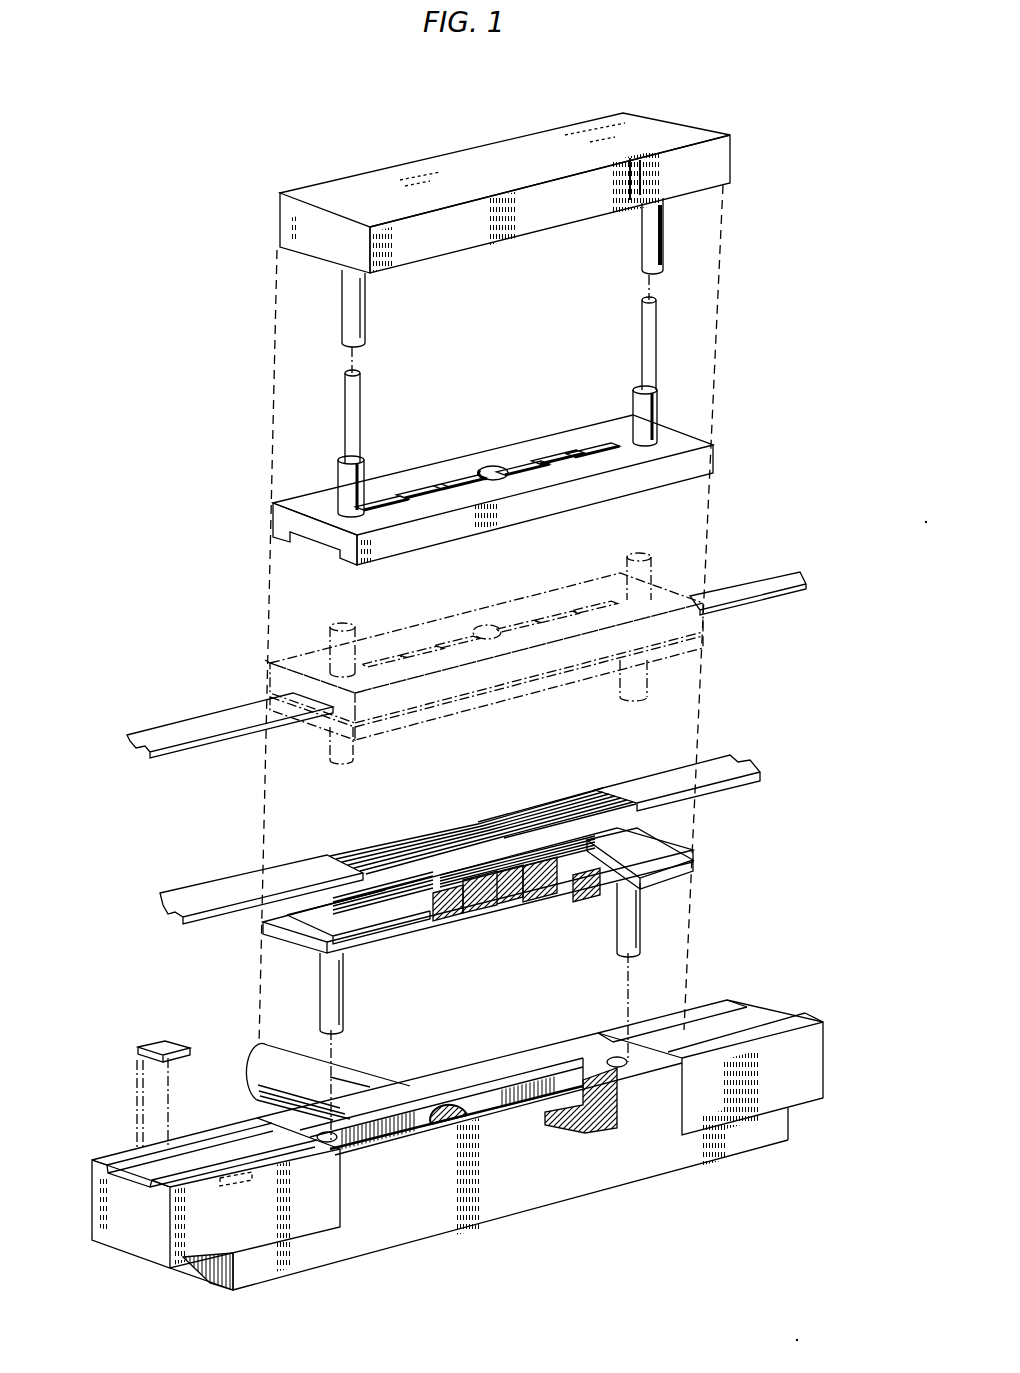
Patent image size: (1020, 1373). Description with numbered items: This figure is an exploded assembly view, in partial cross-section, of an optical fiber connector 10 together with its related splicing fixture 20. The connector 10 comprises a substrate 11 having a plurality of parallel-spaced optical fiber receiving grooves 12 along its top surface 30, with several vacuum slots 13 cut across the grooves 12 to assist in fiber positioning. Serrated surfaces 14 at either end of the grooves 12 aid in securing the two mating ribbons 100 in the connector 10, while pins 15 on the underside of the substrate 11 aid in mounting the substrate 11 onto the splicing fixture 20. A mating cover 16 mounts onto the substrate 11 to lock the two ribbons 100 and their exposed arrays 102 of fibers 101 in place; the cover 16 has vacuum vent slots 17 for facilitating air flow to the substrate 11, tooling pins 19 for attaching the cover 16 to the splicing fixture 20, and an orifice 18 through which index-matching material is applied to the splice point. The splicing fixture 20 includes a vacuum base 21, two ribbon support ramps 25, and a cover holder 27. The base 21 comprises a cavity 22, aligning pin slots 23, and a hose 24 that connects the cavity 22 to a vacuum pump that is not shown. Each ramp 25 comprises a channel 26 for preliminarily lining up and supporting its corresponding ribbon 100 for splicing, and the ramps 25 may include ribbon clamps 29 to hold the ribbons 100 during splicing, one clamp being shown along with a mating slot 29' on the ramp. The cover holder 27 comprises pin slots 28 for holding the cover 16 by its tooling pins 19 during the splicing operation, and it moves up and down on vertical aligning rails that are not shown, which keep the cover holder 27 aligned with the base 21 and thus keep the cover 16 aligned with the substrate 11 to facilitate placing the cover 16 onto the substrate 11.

The connector 10 is at (516, 745).
The substrate 11 is at (405, 722).
The optical fiber receiving grooves 12 is at (496, 908).
The vacuum slots 13 is at (525, 896).
The serrated surfaces 14 is at (650, 838).
The pins 15 is at (626, 690).
The cover 16 is at (529, 506).
The vacuum vent slots 17 is at (560, 458).
The orifice 18 is at (486, 475).
The tooling pins 19 is at (640, 338).
The splicing fixture 20 is at (437, 167).
The vacuum base 21 is at (568, 1185).
The cavity 22 is at (495, 1097).
The aligning pin slots 23 is at (608, 1060).
The hose 24 is at (250, 1063).
The ribbon support ramps 25 is at (795, 1108).
The channel 26 is at (762, 1022).
The cover holder 27 is at (538, 218).
The pin slots 28 is at (647, 258).
The ribbon clamps 29 is at (141, 1094).
The locating slot 29' is at (236, 1203).
The top surface 30 is at (430, 886).
The ribbons 100 is at (785, 580).
The fibers 101 is at (478, 824).
The arrays 102 is at (535, 815).